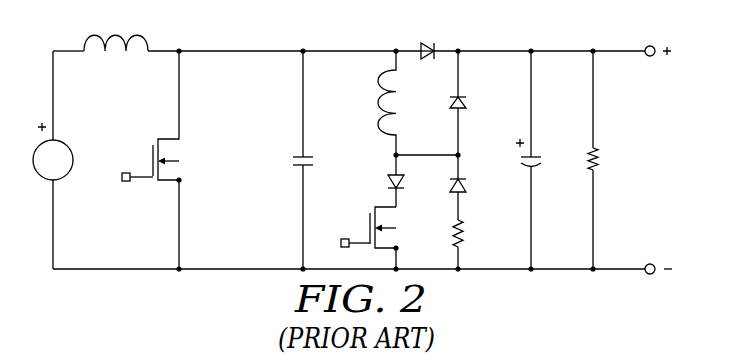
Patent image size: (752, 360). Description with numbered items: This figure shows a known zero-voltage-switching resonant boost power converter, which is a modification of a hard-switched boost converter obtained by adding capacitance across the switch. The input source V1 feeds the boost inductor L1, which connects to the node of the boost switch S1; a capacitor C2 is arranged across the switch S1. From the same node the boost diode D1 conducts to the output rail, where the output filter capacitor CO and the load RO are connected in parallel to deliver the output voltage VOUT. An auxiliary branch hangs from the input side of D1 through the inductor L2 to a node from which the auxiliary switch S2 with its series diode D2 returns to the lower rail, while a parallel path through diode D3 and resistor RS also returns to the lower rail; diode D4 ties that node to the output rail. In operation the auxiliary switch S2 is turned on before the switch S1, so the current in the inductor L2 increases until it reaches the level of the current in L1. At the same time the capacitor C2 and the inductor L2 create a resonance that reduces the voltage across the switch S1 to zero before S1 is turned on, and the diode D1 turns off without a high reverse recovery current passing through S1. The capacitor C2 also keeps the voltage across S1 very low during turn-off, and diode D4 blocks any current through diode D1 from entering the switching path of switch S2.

The boost inductor L1 is at (116, 31).
The input ac source V1 is at (65, 151).
The boost switch S1 is at (196, 160).
The capacitor C2 is at (315, 160).
The inductor L2 is at (376, 103).
The boost diode D1 is at (428, 38).
The diode D2 is at (409, 181).
The diode D3 is at (471, 187).
The diode D4 is at (471, 103).
The auxiliary switch S2 is at (381, 238).
The sense resistor RS is at (473, 244).
The output filter capacitor CO is at (544, 160).
The load RO is at (609, 160).
The output voltage VOUT is at (678, 163).